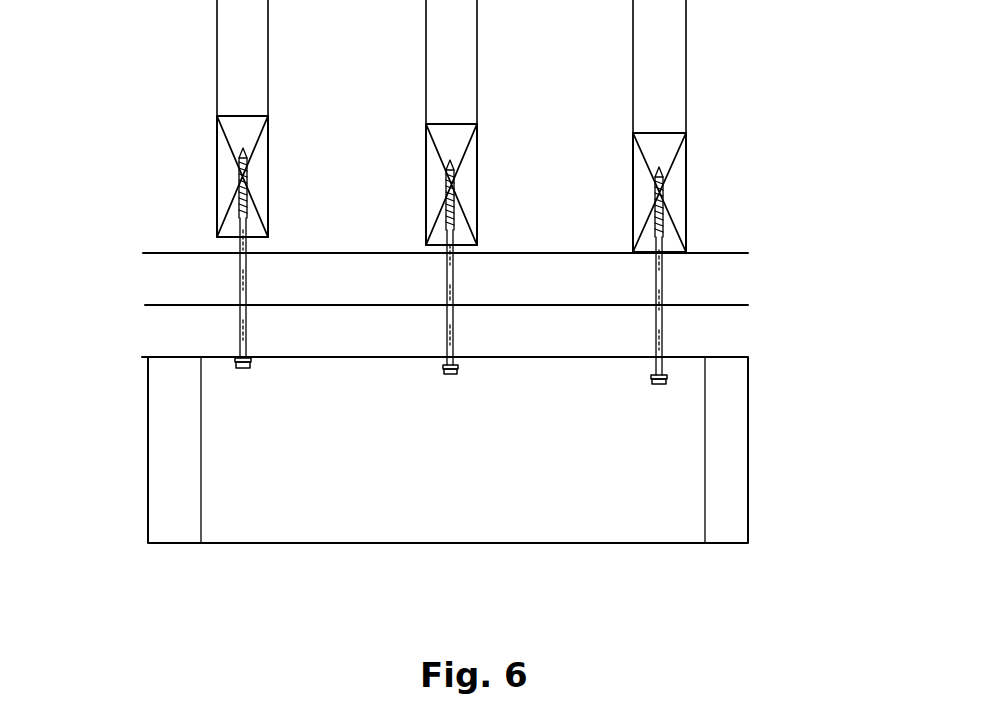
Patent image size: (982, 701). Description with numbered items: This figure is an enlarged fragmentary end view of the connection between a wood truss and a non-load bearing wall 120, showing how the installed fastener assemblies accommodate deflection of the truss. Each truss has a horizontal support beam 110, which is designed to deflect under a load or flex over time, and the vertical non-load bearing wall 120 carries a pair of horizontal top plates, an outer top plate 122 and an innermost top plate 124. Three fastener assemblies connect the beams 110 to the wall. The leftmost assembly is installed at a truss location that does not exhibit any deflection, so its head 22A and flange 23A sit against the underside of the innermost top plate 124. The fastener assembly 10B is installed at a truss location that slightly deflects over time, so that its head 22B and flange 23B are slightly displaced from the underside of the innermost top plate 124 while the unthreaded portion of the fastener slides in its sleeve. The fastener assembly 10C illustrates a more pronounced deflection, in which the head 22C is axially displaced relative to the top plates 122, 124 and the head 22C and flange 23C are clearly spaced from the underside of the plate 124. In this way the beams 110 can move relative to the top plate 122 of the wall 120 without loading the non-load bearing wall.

The horizontal support beam 110 is at (222, 168).
The top plate 122 is at (176, 277).
The innermost top plate 124 is at (160, 336).
The non-load bearing wall 120 is at (225, 450).
The fastener assembly 10B is at (466, 339).
The fastener assembly 10C is at (262, 326).
The head 22A is at (241, 369).
The head 22B is at (453, 375).
The head 22C is at (660, 385).
The flange 23A is at (250, 362).
The flange 23B is at (458, 366).
The flange 23C is at (668, 378).